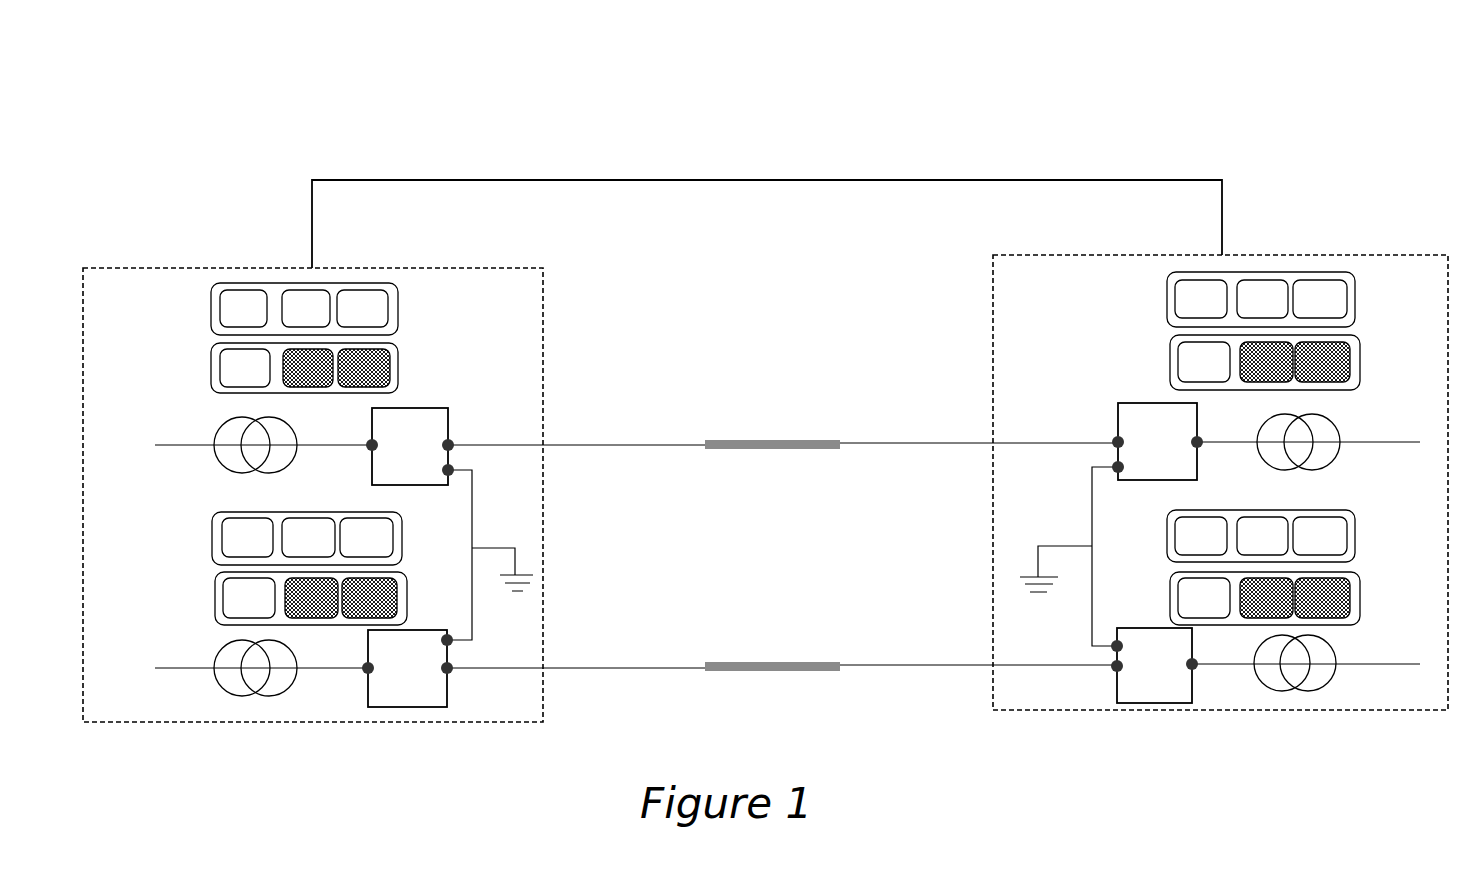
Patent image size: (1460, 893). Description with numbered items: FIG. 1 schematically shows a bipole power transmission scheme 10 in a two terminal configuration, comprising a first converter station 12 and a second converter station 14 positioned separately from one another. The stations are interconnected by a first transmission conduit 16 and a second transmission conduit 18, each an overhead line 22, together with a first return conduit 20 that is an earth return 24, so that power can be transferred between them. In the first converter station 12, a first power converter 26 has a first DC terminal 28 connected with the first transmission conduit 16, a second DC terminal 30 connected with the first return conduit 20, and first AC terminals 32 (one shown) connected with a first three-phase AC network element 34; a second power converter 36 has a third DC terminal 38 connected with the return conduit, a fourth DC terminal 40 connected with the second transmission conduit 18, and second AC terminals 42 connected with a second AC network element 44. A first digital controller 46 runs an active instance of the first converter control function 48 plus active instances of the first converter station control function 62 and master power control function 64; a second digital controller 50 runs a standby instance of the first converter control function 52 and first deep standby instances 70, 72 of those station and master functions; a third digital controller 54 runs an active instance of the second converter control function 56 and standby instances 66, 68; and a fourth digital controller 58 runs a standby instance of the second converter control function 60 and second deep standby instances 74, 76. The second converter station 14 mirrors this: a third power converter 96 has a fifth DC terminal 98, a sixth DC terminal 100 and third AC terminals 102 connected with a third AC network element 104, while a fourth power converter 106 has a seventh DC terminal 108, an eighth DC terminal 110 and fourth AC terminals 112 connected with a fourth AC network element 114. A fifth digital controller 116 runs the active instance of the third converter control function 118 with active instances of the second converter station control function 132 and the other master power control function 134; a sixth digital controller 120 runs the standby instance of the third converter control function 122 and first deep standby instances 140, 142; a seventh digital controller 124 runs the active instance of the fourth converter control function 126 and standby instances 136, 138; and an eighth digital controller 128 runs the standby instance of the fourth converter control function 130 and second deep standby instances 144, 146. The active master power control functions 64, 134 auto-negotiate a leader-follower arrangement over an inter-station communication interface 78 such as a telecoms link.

The bipole power transmission scheme 10 is at (266, 146).
The first converter station 12 is at (478, 268).
The second converter station 14 is at (1030, 255).
The first transmission conduit 16 is at (636, 429).
The second transmission conduit 18 is at (636, 651).
The first return conduit 20 is at (543, 557).
The overhead line 22 is at (772, 555).
The earth return 24 is at (1069, 556).
The first power converter 26 is at (519, 404).
The first DC terminal 28 is at (462, 436).
The second DC terminal 30 is at (450, 472).
The first AC terminals 32 is at (372, 447).
The first three-phase AC network element 34 is at (290, 465).
The second power converter 36 is at (517, 648).
The third DC terminal 38 is at (447, 670).
The fourth DC terminal 40 is at (447, 642).
The second AC terminals 42 is at (368, 670).
The second three-phase AC network element 44 is at (265, 700).
The first digital controller 46 is at (269, 279).
The active instance of the first converter control function 48 is at (243, 308).
The second digital controller 50 is at (269, 358).
The standby instance of the first converter control function 52 is at (245, 368).
The third digital controller 54 is at (272, 510).
The active instance of the second converter control function 56 is at (247, 537).
The fourth digital controller 58 is at (273, 591).
The standby instance of the second converter control function 60 is at (249, 598).
The active instance of the first converter station control function 62 is at (306, 308).
The active instance of the master power control function 64 is at (362, 308).
The standby instance of the first converter station control function 66 is at (308, 537).
The standby instance of the master power control function 68 is at (366, 537).
The first deep standby instance of the first converter station control function 70 is at (308, 368).
The first deep standby instance of the master power control function 72 is at (364, 368).
The second deep standby instance of the first converter station control function 74 is at (311, 598).
The second deep standby instance of the master power control function 76 is at (369, 598).
The inter-station communication interface 78 is at (767, 207).
The third power converter 96 is at (1048, 399).
The fifth DC terminal 98 is at (1118, 440).
The sixth DC terminal 100 is at (1118, 466).
The third AC terminals 102 is at (1197, 444).
The third three-phase AC network element 104 is at (1300, 470).
The fourth power converter 106 is at (1028, 651).
The seventh DC terminal 108 is at (1117, 668).
The eighth DC terminal 110 is at (1110, 645).
The fourth AC terminals 112 is at (1192, 668).
The fourth three-phase AC network element 114 is at (1282, 692).
The fifth digital controller 116 is at (1300, 269).
The control element 118 is at (1201, 299).
The sixth digital controller 120 is at (1304, 355).
The control element 122 is at (1204, 362).
The seventh digital controller 124 is at (1299, 504).
The active instance of the fourth converter control function 126 is at (1201, 536).
The eighth digital controller 128 is at (1300, 604).
The standby instance of the fourth converter control function 130 is at (1204, 598).
The active instance of the second converter station control function 132 is at (1262, 299).
The active instance of the other master power control function 134 is at (1320, 299).
The standby instance of the second converter station control function 136 is at (1262, 536).
The standby instance of the other master power control function 138 is at (1320, 536).
The first deep standby instance of the second converter station control function 140 is at (1266, 362).
The first deep standby instance of the other master power control function 142 is at (1322, 362).
The second deep standby instance of the second converter station control function 144 is at (1266, 598).
The second deep standby instance of the other master power control function 146 is at (1322, 598).